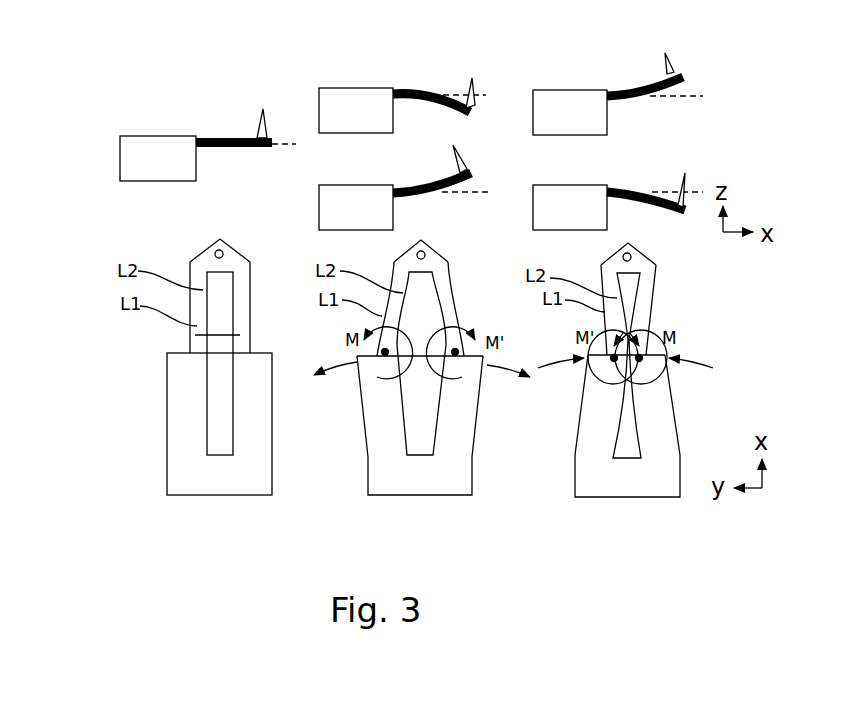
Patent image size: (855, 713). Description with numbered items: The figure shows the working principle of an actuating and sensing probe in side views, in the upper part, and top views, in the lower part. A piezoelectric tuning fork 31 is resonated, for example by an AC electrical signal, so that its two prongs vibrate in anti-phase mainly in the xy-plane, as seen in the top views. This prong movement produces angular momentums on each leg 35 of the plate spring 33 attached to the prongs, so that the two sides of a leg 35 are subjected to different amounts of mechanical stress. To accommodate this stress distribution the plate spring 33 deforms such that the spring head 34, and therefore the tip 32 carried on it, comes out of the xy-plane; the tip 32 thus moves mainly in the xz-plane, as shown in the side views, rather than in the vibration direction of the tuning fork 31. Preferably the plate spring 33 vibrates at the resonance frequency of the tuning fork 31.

The tuning fork 31 is at (140, 156).
The tip 32 is at (262, 130).
The plate spring 33 is at (180, 252).
The spring head 34 is at (472, 170).
The leg 35 is at (197, 330).